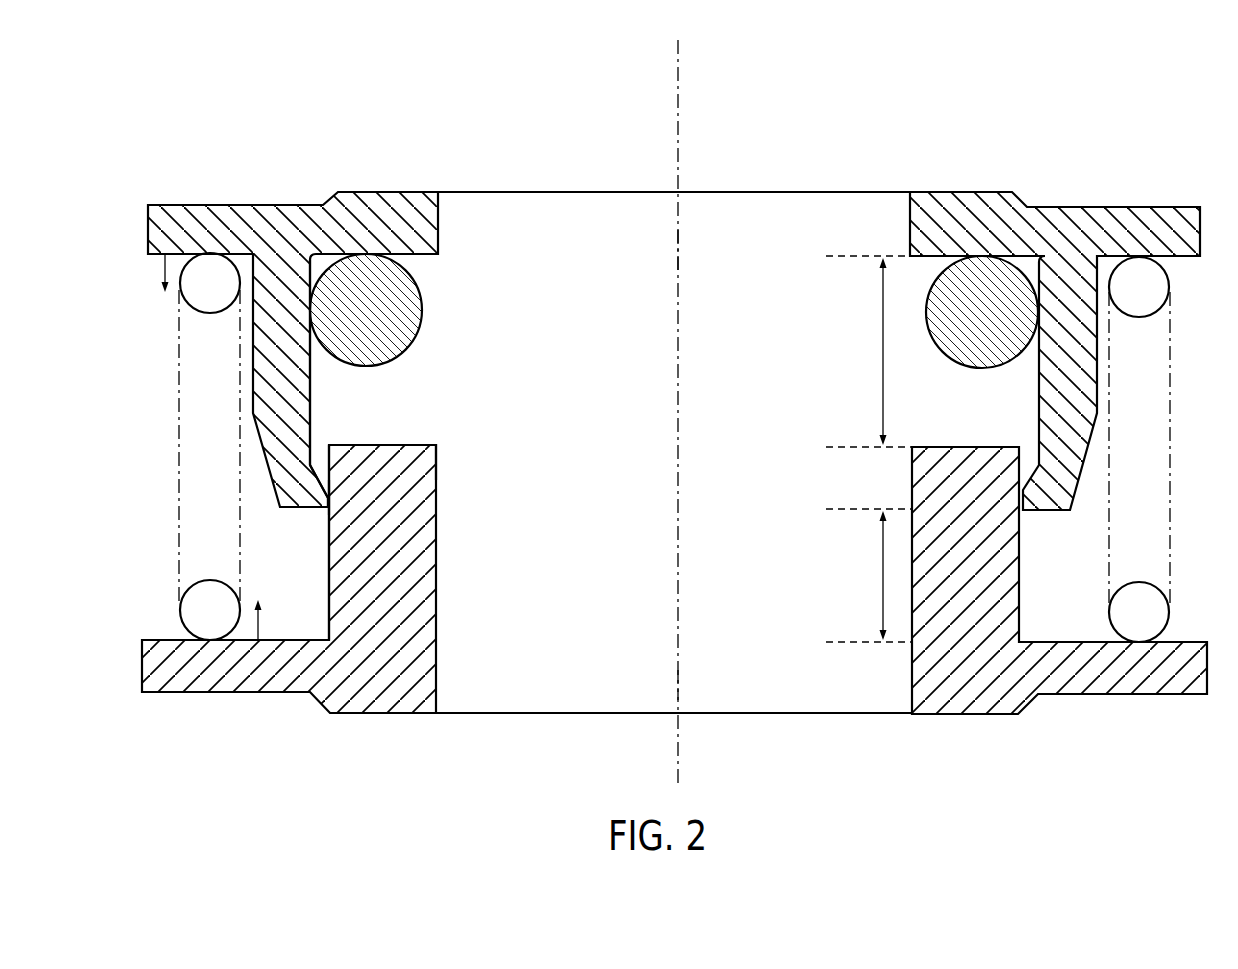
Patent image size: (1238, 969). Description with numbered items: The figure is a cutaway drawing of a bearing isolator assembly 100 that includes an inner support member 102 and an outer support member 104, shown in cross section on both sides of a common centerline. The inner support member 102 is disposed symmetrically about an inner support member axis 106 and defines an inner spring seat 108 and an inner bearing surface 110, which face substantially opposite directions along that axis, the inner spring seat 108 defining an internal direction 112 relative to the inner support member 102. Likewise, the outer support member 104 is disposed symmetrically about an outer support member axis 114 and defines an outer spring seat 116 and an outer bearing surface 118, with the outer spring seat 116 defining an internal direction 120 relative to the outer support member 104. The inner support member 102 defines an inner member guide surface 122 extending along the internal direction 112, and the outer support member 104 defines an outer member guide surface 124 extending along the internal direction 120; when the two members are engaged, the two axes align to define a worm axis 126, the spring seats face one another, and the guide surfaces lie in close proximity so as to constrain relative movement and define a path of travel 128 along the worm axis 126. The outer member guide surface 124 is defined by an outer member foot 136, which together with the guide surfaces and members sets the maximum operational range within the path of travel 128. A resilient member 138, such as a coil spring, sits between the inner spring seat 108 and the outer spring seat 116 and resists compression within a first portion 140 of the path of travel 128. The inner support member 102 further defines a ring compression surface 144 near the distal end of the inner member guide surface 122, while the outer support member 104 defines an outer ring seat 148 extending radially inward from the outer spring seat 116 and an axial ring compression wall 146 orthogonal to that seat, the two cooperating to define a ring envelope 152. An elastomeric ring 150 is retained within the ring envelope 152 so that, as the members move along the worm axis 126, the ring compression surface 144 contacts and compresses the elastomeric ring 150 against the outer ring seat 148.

The bearing isolator assembly 100 is at (372, 97).
The inner support member 102 is at (363, 705).
The outer support member 104 is at (353, 197).
The inner support member axis 106 is at (680, 687).
The inner spring seat 108 is at (155, 640).
The inner bearing surface 110 is at (417, 718).
The internal direction 112 is at (258, 627).
The outer support member axis 114 is at (686, 256).
The outer spring seat 116 is at (150, 255).
The outer bearing surface 118 is at (413, 190).
The internal direction 120 is at (165, 285).
The inner member guide surface 122 is at (325, 557).
The outer member guide surface 124 is at (330, 497).
The worm axis 126 is at (680, 448).
The path of travel 128 is at (880, 580).
The outer member foot 136 is at (315, 457).
The resilient member 138 is at (202, 580).
The first portion 140 is at (880, 358).
The ring compression surface 144 is at (433, 443).
The axial ring compression wall 146 is at (316, 347).
The outer ring seat 148 is at (424, 262).
The elastomeric ring 150 is at (337, 267).
The ring envelope 152 is at (443, 323).